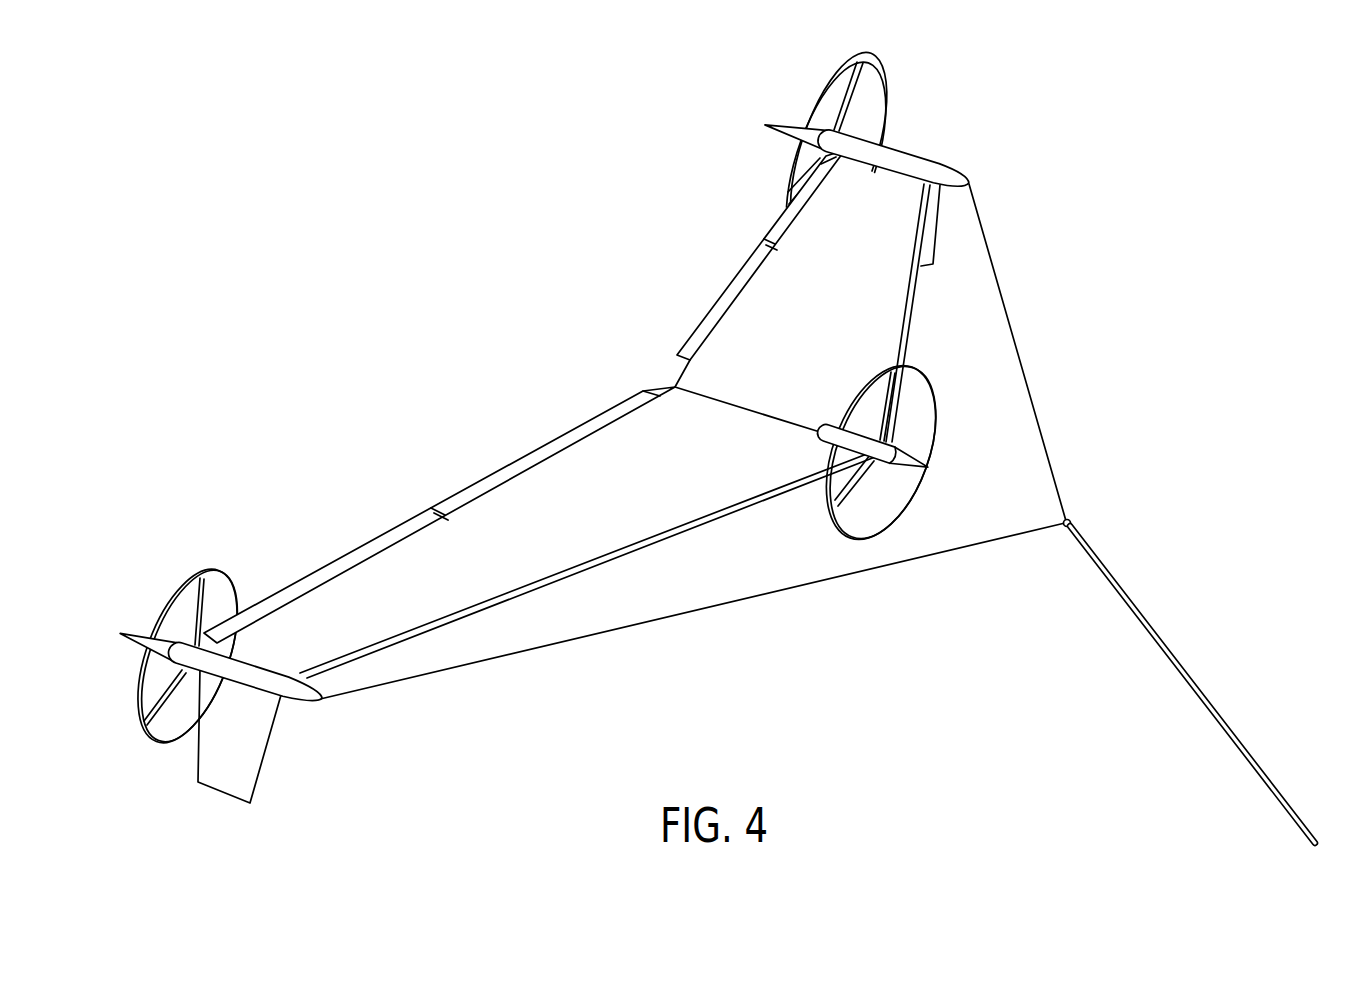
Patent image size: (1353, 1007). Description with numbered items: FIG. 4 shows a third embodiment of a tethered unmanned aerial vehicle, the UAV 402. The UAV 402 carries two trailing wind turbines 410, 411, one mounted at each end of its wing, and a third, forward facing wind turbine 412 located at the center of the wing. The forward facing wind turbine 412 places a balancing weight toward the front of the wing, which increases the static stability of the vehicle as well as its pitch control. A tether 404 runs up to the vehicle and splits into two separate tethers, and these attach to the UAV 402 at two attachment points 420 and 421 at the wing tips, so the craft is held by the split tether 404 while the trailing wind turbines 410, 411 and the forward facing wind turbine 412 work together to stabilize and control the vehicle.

The UAV 402 is at (567, 414).
The tether 404 is at (815, 513).
The trailing wind turbine 410 is at (148, 655).
The trailing wind turbine 411 is at (871, 128).
The forward facing wind turbine 412 is at (921, 452).
The attachment point 420 is at (249, 713).
The attachment point 421 is at (921, 188).